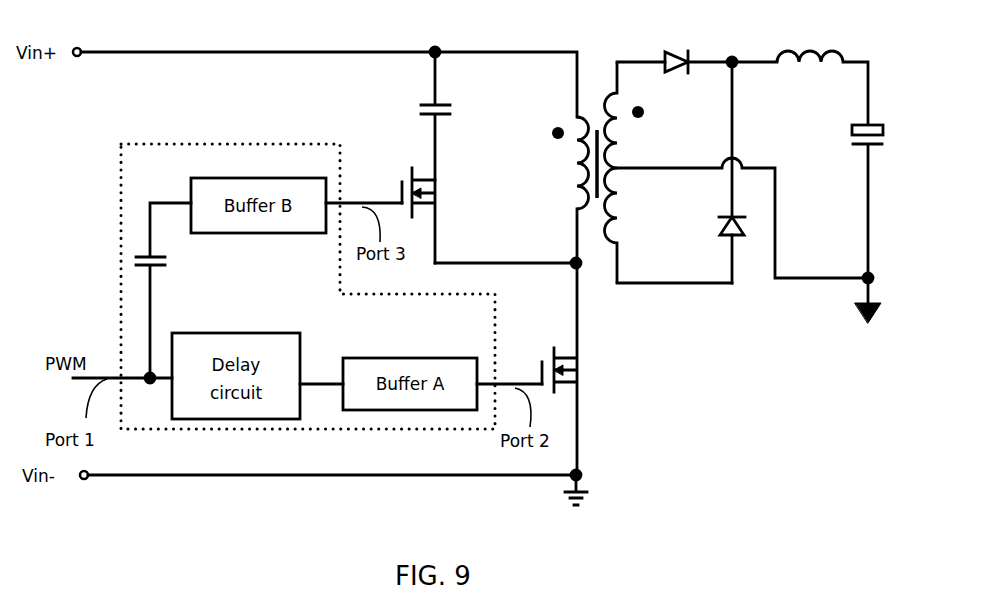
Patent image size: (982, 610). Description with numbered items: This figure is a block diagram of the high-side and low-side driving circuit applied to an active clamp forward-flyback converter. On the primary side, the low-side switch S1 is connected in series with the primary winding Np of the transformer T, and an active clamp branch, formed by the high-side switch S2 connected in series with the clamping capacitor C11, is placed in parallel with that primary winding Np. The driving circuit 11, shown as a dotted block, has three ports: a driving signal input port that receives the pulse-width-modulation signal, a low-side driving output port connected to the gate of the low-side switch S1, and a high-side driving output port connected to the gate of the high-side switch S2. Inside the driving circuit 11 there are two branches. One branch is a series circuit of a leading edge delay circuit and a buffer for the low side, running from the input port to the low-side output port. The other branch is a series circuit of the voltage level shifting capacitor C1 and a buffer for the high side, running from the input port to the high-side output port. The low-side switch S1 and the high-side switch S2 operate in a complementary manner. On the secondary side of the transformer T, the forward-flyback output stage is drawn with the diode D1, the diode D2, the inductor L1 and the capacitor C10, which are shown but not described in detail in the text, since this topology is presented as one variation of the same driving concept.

The driving circuit 11 is at (128, 164).
The voltage level shifting capacitor C1 is at (165, 290).
The clamping capacitor C11 is at (412, 116).
The low-side switch S1 is at (540, 370).
The high-side switch S2 is at (396, 215).
The transformer T is at (589, 172).
The primary winding Np is at (562, 163).
The diode D1 is at (676, 47).
The diode D2 is at (708, 172).
The inductor L1 is at (843, 42).
The capacitor C10 is at (843, 201).